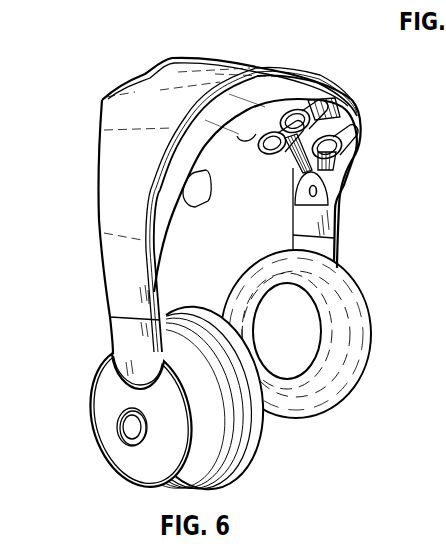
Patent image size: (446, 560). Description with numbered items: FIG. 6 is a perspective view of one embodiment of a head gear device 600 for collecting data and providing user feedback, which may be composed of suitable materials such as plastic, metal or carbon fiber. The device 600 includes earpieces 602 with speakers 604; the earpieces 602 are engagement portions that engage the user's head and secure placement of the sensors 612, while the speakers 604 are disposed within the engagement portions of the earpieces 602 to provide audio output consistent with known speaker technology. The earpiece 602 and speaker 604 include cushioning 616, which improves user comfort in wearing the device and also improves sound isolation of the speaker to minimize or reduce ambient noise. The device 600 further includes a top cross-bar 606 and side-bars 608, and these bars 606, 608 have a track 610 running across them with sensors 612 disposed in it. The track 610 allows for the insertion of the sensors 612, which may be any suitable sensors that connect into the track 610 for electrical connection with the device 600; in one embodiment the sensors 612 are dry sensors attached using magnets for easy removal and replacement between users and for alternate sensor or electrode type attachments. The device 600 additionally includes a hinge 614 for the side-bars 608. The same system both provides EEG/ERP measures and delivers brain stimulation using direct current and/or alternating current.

The device 600 is at (116, 71).
The earpieces 602 is at (100, 353).
The speakers 604 is at (304, 368).
The top cross-bar 606 is at (277, 66).
The side-bars 608 is at (100, 128).
The track 610 is at (297, 166).
The sensors 612 is at (351, 148).
The hinge 614 is at (341, 203).
The cushioning 616 is at (366, 357).